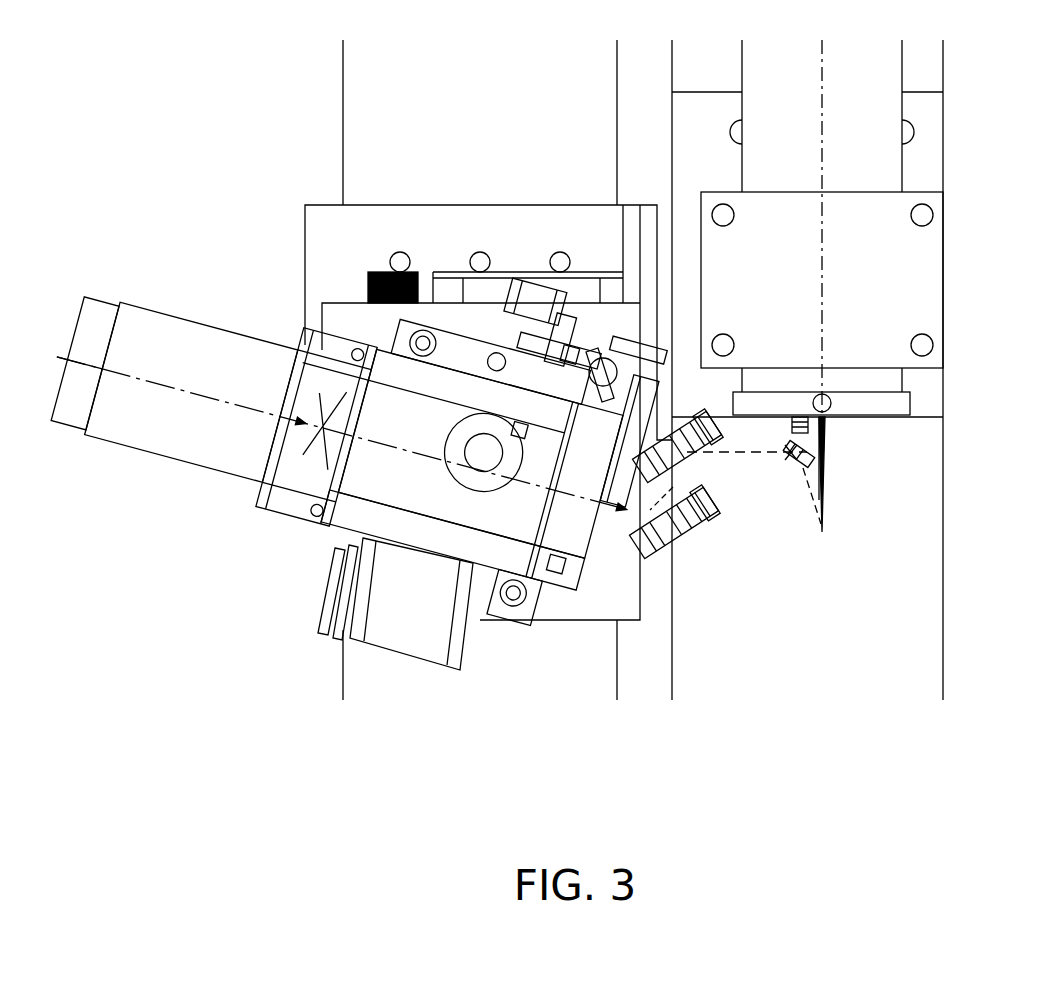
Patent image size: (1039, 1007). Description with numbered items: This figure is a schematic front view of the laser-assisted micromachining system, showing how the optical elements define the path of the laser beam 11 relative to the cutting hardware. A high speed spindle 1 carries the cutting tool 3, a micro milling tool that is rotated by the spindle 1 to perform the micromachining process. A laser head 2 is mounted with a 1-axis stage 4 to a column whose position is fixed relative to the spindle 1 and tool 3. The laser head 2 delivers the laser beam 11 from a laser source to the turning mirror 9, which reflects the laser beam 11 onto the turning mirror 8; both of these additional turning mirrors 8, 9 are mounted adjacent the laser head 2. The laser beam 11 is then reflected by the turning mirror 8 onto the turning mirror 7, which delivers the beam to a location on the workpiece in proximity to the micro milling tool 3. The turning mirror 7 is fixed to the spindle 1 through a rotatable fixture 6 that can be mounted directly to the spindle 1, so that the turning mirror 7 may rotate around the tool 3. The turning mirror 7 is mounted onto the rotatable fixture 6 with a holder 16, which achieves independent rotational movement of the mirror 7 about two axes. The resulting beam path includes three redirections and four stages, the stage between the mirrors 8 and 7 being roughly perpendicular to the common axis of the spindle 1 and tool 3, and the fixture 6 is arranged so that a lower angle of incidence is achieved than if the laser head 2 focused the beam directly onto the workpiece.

The high speed spindle 1 is at (873, 153).
The laser head 2 is at (208, 358).
The cutting tool 3 is at (822, 512).
The 1-axis stage 4 is at (443, 292).
The rotatable fixture 6 is at (873, 402).
The turning mirror 7 is at (822, 487).
The turning mirror 8 is at (698, 468).
The turning mirror 9 is at (668, 545).
The laser beam 11 is at (643, 500).
The holder 16 is at (800, 418).